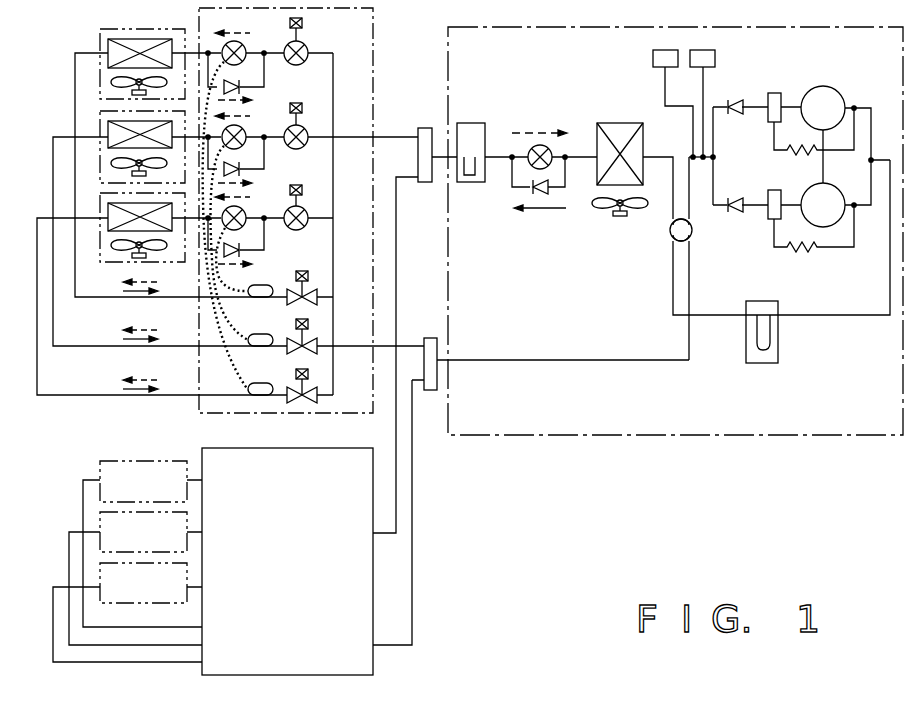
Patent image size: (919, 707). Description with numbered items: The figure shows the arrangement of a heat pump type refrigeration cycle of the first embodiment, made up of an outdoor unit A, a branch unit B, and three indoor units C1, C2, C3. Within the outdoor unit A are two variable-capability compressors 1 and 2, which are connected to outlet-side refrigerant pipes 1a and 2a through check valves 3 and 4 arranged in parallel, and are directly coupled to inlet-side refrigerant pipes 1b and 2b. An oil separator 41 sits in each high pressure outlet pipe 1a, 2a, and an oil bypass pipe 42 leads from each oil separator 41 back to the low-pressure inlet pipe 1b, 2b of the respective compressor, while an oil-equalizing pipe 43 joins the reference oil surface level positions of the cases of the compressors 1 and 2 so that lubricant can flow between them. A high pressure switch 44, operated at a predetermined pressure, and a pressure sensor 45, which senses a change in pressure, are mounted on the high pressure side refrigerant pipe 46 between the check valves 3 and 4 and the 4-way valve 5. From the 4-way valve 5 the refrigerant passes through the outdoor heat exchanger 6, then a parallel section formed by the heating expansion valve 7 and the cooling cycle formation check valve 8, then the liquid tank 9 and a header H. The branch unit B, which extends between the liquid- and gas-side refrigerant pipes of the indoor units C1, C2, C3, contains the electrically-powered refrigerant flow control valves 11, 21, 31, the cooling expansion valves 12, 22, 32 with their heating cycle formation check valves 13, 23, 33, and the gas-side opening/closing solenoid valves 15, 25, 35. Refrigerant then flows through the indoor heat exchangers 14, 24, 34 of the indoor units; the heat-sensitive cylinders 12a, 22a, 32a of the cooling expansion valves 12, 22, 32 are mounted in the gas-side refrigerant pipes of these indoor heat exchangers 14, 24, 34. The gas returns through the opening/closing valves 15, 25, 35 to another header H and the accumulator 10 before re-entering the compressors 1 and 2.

The variable-capability compressor 1 is at (827, 86).
The outlet-side refrigerant pipe 1a is at (781, 93).
The inlet-side refrigerant pipe 1b is at (871, 100).
The variable-capability compressor 2 is at (845, 172).
The outlet-side refrigerant pipe 2a is at (784, 219).
The inlet-side refrigerant pipe 2b is at (856, 208).
The check valve 3 is at (733, 100).
The check valve 4 is at (733, 198).
The 4-way valve 5 is at (690, 238).
The outdoor heat exchanger 6 is at (600, 123).
The heating expansion valve 7 is at (528, 149).
The cooling cycle formation check valve 8 is at (552, 192).
The liquid tank 9 is at (472, 123).
The accumulator 10 is at (778, 346).
The refrigerant flow control valve 11 is at (305, 44).
The cooling expansion valve 12 is at (241, 44).
The heat-sensitive cylinder 12a is at (266, 283).
The heating cycle formation check valve 13 is at (252, 73).
The indoor heat exchanger 14 is at (150, 39).
The gas-side opening/closing valve 15 is at (308, 292).
The refrigerant flow control valve 21 is at (310, 128).
The cooling expansion valve 22 is at (241, 128).
The heat-sensitive cylinder 22a is at (258, 334).
The heating cycle formation check valve 23 is at (242, 165).
The indoor heat exchanger 24 is at (112, 150).
The gas-side opening/closing valve 25 is at (309, 326).
The refrigerant flow control valve 31 is at (310, 209).
The cooling expansion valve 32 is at (244, 209).
The heat-sensitive cylinder 32a is at (258, 384).
The heating cycle formation check valve 33 is at (243, 247).
The indoor heat exchanger 34 is at (112, 240).
The gas-side opening/closing valve 35 is at (309, 376).
The oil separator 41 is at (772, 122).
The oil bypass pipe 42 is at (856, 138).
The oil-equalizing pipe 43 is at (823, 172).
The high pressure switch 44 is at (715, 58).
The pressure sensor 45 is at (653, 58).
The high pressure side refrigerant pipe 46 is at (698, 162).
The outdoor unit A is at (588, 27).
The branch unit B is at (375, 56).
The indoor unit C1 is at (100, 46).
The indoor unit C2 is at (100, 128).
The indoor unit C3 is at (100, 207).
The header H is at (424, 128).